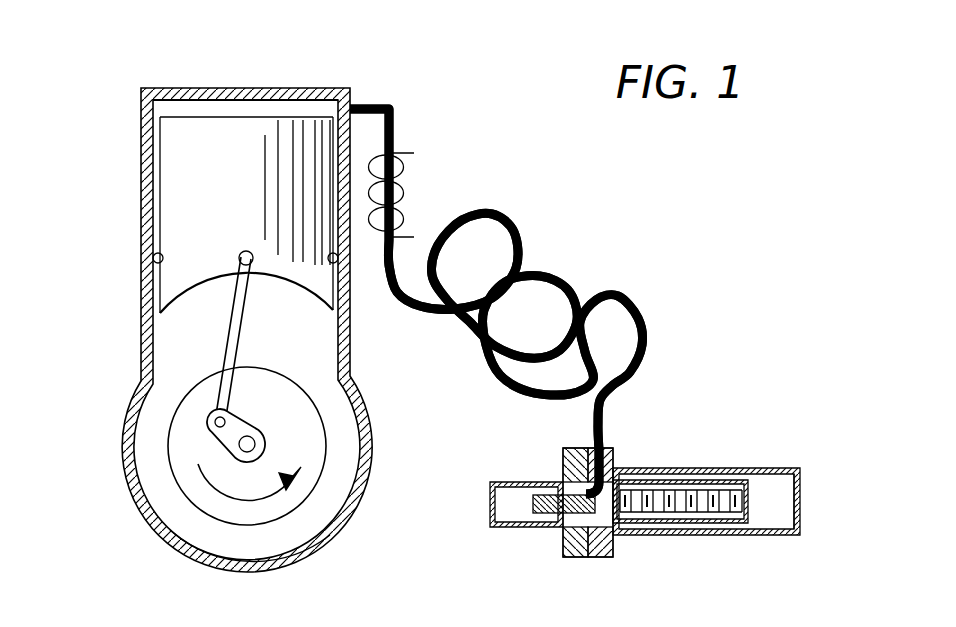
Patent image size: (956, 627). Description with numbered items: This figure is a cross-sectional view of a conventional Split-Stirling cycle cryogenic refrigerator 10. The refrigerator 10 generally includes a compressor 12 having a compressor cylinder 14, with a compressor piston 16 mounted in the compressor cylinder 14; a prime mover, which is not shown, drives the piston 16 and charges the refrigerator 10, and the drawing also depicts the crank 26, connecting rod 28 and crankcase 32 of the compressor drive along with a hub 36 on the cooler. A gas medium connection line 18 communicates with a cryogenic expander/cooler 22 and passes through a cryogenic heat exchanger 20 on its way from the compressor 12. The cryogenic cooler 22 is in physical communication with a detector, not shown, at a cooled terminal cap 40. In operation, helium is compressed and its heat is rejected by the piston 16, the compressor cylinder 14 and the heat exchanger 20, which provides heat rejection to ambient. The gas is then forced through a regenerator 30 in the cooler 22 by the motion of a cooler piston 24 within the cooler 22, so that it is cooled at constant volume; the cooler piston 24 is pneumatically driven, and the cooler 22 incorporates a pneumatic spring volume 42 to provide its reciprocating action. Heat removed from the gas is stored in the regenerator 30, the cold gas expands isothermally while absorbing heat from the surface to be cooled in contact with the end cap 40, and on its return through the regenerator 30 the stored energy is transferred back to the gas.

The Split-Stirling cycle cryogenic refrigerator 10 is at (728, 352).
The compressor 12 is at (142, 238).
The compressor cylinder 14 is at (258, 108).
The compressor piston 16 is at (178, 175).
The gas medium connection line 18 is at (640, 318).
The cryogenic heat exchanger 20 is at (414, 150).
The cryogenic expander/cooler 22 is at (776, 468).
The cooler piston 24 is at (531, 503).
The crank 26 is at (212, 445).
The connecting rod 28 is at (222, 334).
The regenerator 30 is at (688, 478).
The crankcase 32 is at (260, 572).
The hub 36 is at (563, 542).
The cooled terminal cap 40 is at (800, 504).
The pneumatic spring volume 42 is at (511, 482).